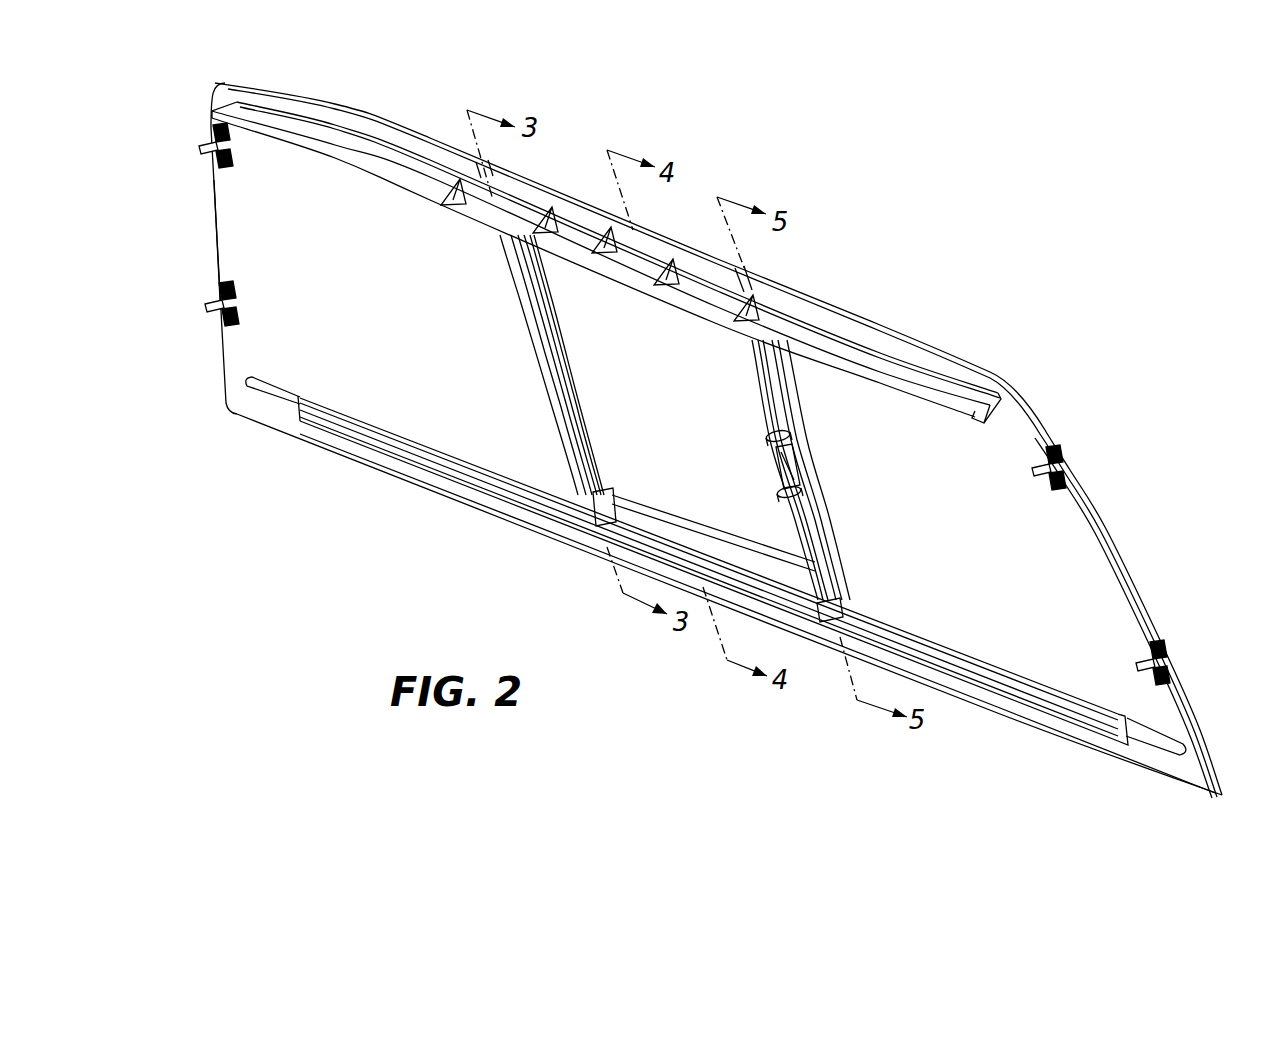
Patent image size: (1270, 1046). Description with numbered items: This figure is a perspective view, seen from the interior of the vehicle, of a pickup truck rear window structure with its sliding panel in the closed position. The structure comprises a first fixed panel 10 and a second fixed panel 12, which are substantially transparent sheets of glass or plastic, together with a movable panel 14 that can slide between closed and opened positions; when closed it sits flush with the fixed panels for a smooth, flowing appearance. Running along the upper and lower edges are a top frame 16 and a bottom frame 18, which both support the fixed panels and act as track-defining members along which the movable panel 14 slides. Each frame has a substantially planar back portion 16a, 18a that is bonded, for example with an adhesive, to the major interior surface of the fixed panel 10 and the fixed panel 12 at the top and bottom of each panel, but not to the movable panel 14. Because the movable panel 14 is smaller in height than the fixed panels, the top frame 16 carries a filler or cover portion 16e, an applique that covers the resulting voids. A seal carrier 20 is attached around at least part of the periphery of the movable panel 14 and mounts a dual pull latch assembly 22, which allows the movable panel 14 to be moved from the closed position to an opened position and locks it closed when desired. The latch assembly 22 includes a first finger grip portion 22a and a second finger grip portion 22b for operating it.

The first fixed panel 10 is at (1053, 528).
The second fixed panel 12 is at (266, 256).
The movable panel 14 is at (700, 466).
The top frame 16 is at (267, 121).
The substantially planar back portion 16a is at (396, 148).
The filler or cover portion 16e is at (527, 200).
The bottom frame 18 is at (282, 398).
The substantially planar back portion 18a is at (255, 388).
The seal carrier 20 is at (620, 495).
The latch assembly 22 is at (765, 467).
The first finger grip portion 22a is at (765, 433).
The second finger grip portion 22b is at (790, 492).